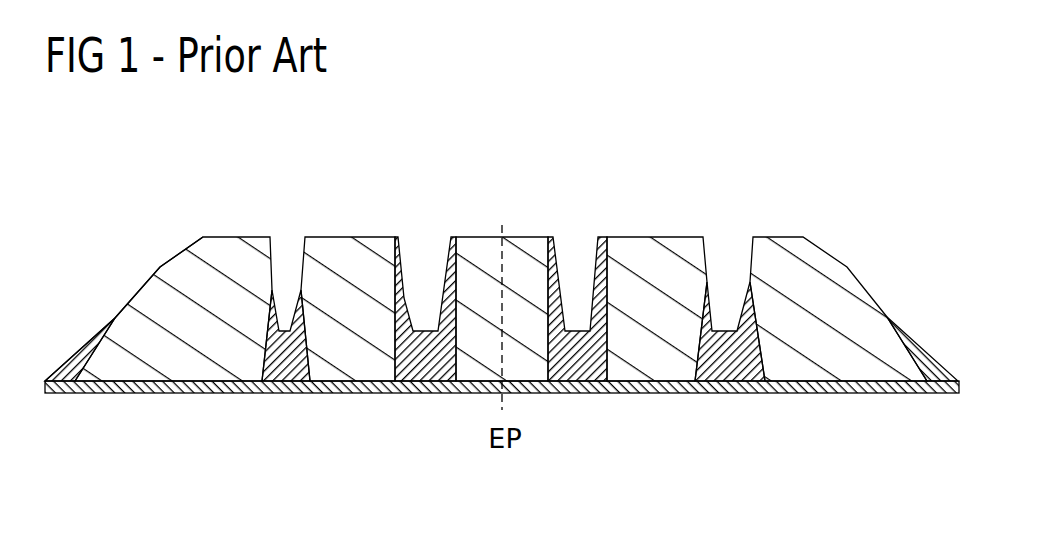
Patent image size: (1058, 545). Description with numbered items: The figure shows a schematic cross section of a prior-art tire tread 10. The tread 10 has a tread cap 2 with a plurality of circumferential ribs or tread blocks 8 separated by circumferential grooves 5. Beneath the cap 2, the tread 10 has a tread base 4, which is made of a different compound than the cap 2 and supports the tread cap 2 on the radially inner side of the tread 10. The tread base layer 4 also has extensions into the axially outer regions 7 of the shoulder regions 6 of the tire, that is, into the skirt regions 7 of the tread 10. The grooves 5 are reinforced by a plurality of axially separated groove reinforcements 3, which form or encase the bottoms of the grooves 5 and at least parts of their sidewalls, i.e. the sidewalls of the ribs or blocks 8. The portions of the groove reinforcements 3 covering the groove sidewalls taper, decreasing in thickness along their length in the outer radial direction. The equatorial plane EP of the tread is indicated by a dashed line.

The tread cap 2 is at (223, 250).
The groove reinforcement 3 is at (279, 372).
The tread base 4 is at (866, 394).
The circumferential groove 5 is at (421, 312).
The shoulder region 6 is at (136, 268).
The skirt region 7 is at (71, 336).
The tread block 8 is at (331, 250).
The tire tread 10 is at (485, 222).